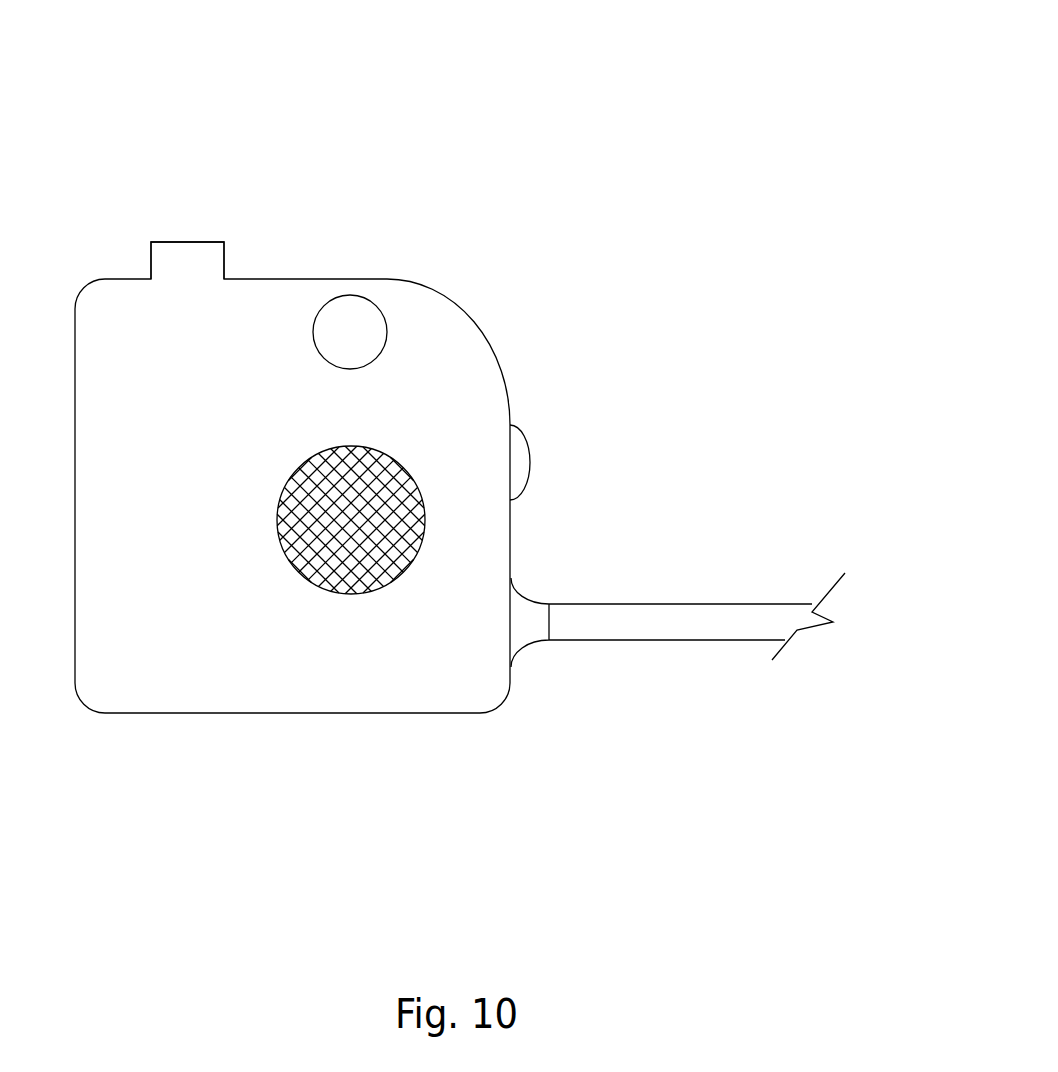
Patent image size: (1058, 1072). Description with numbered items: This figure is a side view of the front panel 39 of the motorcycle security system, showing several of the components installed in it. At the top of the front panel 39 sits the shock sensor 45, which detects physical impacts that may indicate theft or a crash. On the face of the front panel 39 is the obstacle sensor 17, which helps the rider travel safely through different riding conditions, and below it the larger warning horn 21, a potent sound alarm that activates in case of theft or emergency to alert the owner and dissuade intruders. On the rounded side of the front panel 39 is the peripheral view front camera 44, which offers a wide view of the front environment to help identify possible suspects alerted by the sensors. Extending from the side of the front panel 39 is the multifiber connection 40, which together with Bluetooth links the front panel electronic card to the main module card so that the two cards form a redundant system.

The front panel 39 is at (176, 703).
The shock sensor 45 is at (200, 235).
The obstacle sensor 17 is at (380, 334).
The peripheral view front camera 44 is at (541, 440).
The warning horn 21 is at (440, 529).
The multifiber connection 40 is at (672, 634).